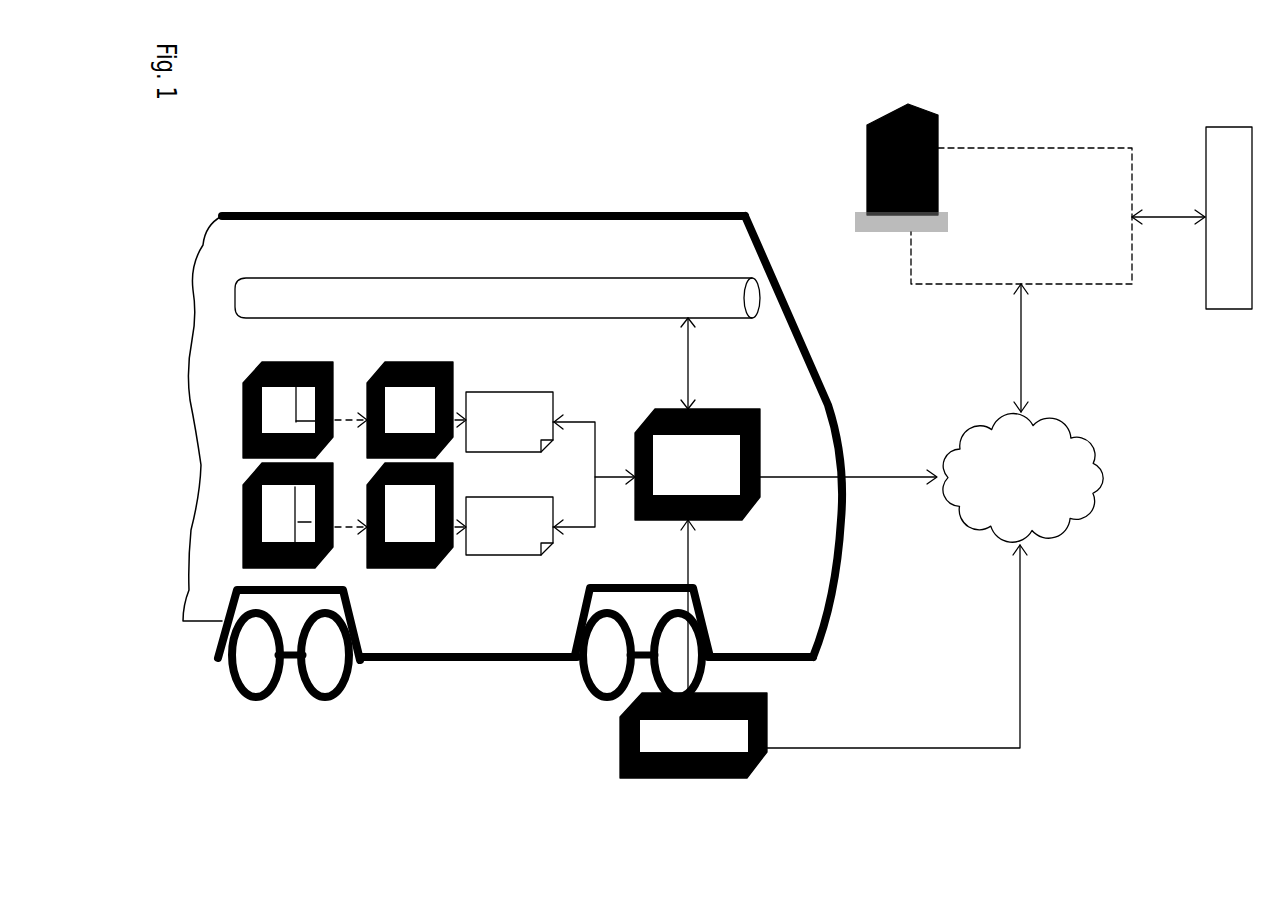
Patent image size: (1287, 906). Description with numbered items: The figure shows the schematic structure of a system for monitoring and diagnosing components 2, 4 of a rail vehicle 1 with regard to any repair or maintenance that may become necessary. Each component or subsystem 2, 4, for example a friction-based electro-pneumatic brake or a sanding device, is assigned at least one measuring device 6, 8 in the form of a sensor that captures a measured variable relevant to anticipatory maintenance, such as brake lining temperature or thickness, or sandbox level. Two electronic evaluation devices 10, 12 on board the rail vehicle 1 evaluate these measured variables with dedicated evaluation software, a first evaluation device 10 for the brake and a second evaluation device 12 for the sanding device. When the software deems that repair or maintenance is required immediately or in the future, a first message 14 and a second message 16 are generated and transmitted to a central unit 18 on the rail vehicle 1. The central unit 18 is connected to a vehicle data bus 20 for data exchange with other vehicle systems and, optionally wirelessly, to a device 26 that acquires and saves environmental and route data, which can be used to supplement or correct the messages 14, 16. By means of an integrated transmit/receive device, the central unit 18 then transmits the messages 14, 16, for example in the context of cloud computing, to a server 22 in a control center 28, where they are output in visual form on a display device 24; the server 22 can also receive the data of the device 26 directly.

The rail vehicle 1 is at (307, 211).
The component 2 is at (287, 360).
The component 4 is at (244, 544).
The measuring device 6 is at (305, 404).
The measuring device 8 is at (303, 514).
The first evaluation device 10 is at (417, 360).
The second evaluation device 12 is at (410, 560).
The first message 14 is at (509, 422).
The second message 16 is at (509, 526).
The central unit 18 is at (697, 464).
The vehicle data bus 20 is at (562, 287).
The server 22 is at (942, 114).
The display device 24 is at (1228, 296).
The device 26 is at (693, 735).
The control center 28 is at (1020, 158).